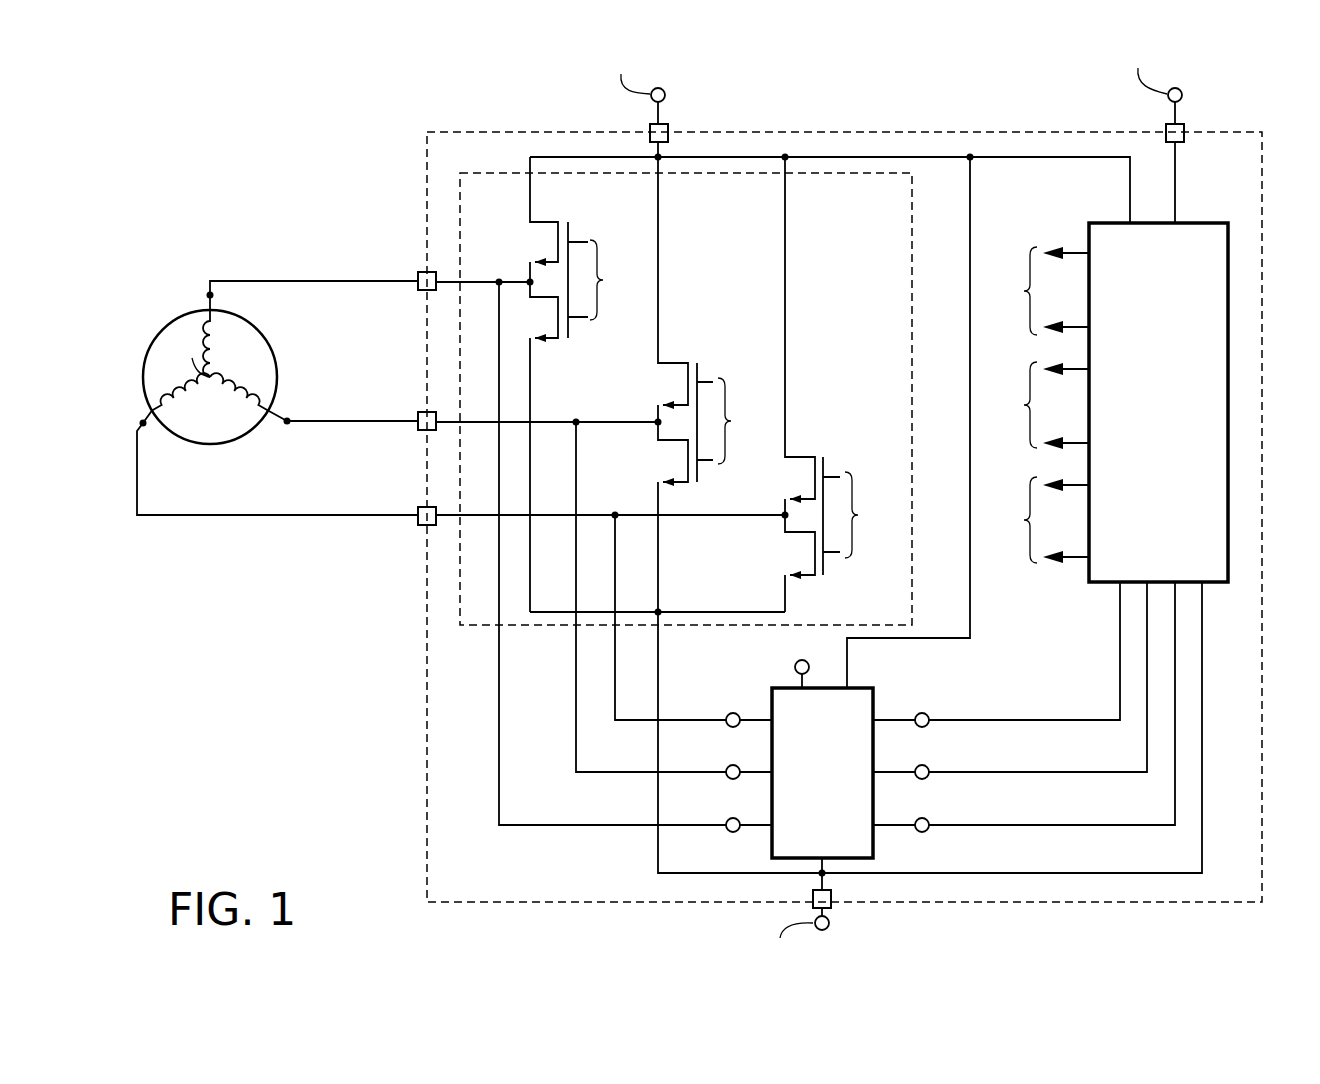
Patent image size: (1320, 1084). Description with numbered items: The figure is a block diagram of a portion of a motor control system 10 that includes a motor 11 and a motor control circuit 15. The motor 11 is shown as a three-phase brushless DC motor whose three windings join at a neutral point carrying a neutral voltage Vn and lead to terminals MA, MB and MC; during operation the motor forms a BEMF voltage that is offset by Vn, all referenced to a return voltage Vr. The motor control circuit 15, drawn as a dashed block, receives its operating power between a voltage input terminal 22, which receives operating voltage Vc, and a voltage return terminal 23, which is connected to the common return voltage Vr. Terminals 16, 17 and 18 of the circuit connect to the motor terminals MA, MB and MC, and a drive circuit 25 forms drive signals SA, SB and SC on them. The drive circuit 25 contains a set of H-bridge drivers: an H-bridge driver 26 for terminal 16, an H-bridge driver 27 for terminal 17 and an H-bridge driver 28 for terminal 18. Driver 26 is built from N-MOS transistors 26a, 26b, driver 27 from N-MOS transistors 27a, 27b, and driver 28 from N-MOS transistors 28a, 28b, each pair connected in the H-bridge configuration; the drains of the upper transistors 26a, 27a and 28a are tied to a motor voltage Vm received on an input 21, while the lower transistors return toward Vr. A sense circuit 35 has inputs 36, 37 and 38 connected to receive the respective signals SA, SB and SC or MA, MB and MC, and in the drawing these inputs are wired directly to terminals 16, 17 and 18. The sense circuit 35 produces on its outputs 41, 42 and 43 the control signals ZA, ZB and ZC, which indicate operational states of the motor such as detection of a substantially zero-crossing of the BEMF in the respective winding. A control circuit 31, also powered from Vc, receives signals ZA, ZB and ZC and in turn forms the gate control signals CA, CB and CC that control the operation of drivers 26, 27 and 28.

The motor control system 10 is at (291, 774).
The motor 11 is at (280, 363).
The motor control circuit 15 is at (1262, 328).
The terminal 16 is at (420, 270).
The terminal 17 is at (420, 410).
The terminal 18 is at (420, 505).
The input 21 is at (667, 122).
The voltage input terminal 22 is at (1183, 122).
The voltage return terminal 23 is at (835, 903).
The drive circuit 25 is at (912, 238).
The H-bridge driver 26 is at (562, 384).
The N-MOS transistor 26a is at (533, 252).
The N-MOS transistor 26b is at (543, 345).
The H-bridge driver 27 is at (691, 384).
The N-MOS transistor 27a is at (662, 378).
The N-MOS transistor 27b is at (672, 485).
The H-bridge driver 28 is at (819, 386).
The N-MOS transistor 28a is at (787, 491).
The N-MOS transistor 28b is at (803, 578).
The control circuit 31 is at (1190, 222).
The sense circuit 35 is at (828, 747).
The input 36 is at (730, 819).
The input 37 is at (730, 766).
The input 38 is at (730, 713).
The output 41 is at (927, 713).
The output 42 is at (927, 766).
The output 43 is at (927, 819).